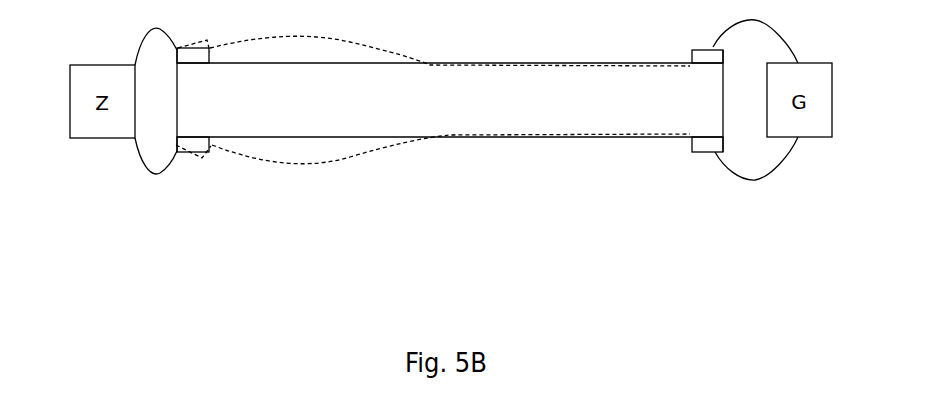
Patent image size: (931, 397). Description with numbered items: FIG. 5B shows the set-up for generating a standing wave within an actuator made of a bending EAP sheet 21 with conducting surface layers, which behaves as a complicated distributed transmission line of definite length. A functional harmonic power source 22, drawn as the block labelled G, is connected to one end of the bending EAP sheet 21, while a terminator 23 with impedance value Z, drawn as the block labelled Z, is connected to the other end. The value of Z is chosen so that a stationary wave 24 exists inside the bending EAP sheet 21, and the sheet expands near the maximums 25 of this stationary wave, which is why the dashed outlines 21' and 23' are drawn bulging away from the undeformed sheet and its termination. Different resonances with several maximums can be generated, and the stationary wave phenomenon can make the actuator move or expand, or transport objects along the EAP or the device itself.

The bending EAP sheet 21 is at (450, 89).
The deformed connecting body (bent state) 21' is at (450, 36).
The functional harmonic power source 22 is at (707, 58).
The terminator 23 is at (225, 109).
The deformed left end flange 23' is at (167, 128).
The stationary wave 24 is at (505, 135).
The maximums of stationary wave 25 is at (327, 160).